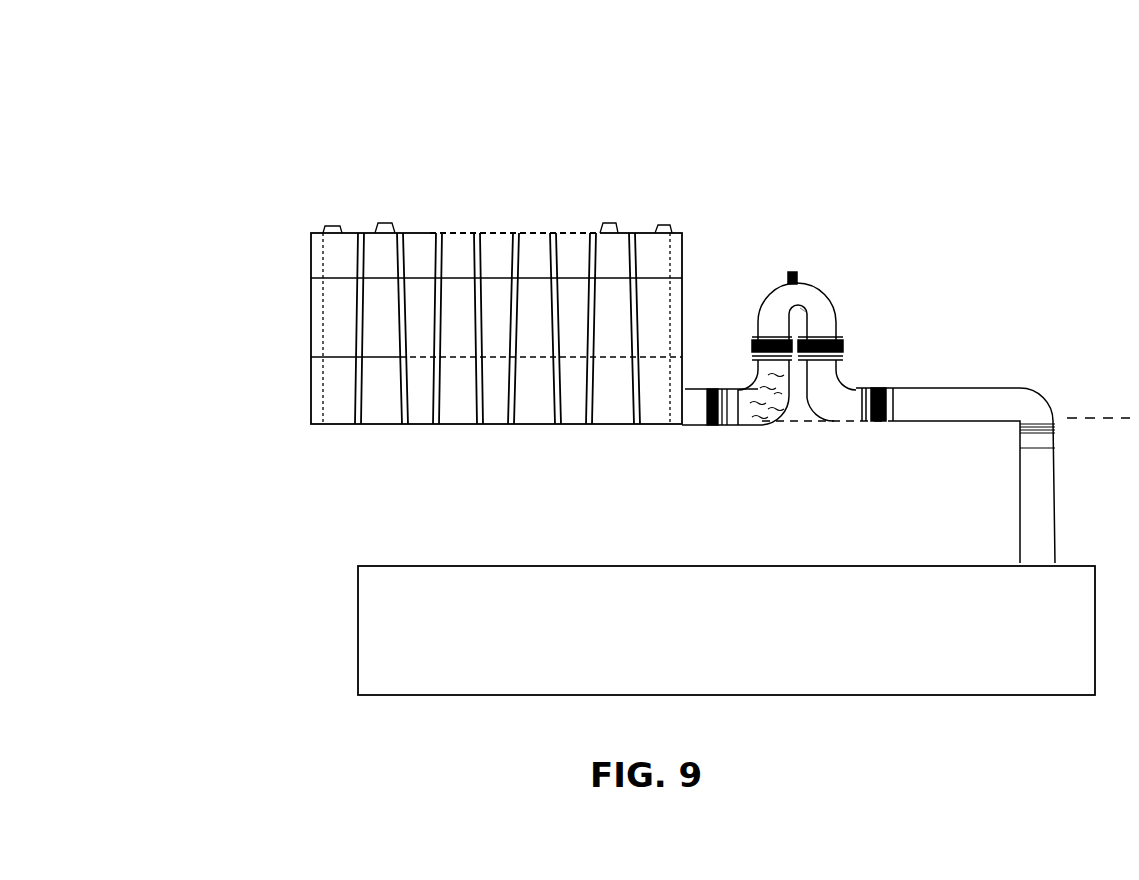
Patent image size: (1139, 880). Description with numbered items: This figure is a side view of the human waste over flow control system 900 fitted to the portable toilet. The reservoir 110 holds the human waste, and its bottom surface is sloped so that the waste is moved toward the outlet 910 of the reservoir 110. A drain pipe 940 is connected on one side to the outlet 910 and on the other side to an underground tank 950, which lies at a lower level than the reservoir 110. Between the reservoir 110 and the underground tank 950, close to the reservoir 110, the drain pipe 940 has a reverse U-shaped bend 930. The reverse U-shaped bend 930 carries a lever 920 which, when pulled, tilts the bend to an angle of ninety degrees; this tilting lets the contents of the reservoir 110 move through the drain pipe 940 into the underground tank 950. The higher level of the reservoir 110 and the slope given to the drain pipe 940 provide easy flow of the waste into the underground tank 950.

The human waste over flow control system 900 is at (370, 123).
The reservoir 110 is at (333, 403).
The outlet 910 is at (684, 395).
The lever 920 is at (796, 272).
The reverse U-shaped bend 930 is at (813, 315).
The drain pipe 940 is at (962, 392).
The underground tank 950 is at (373, 639).